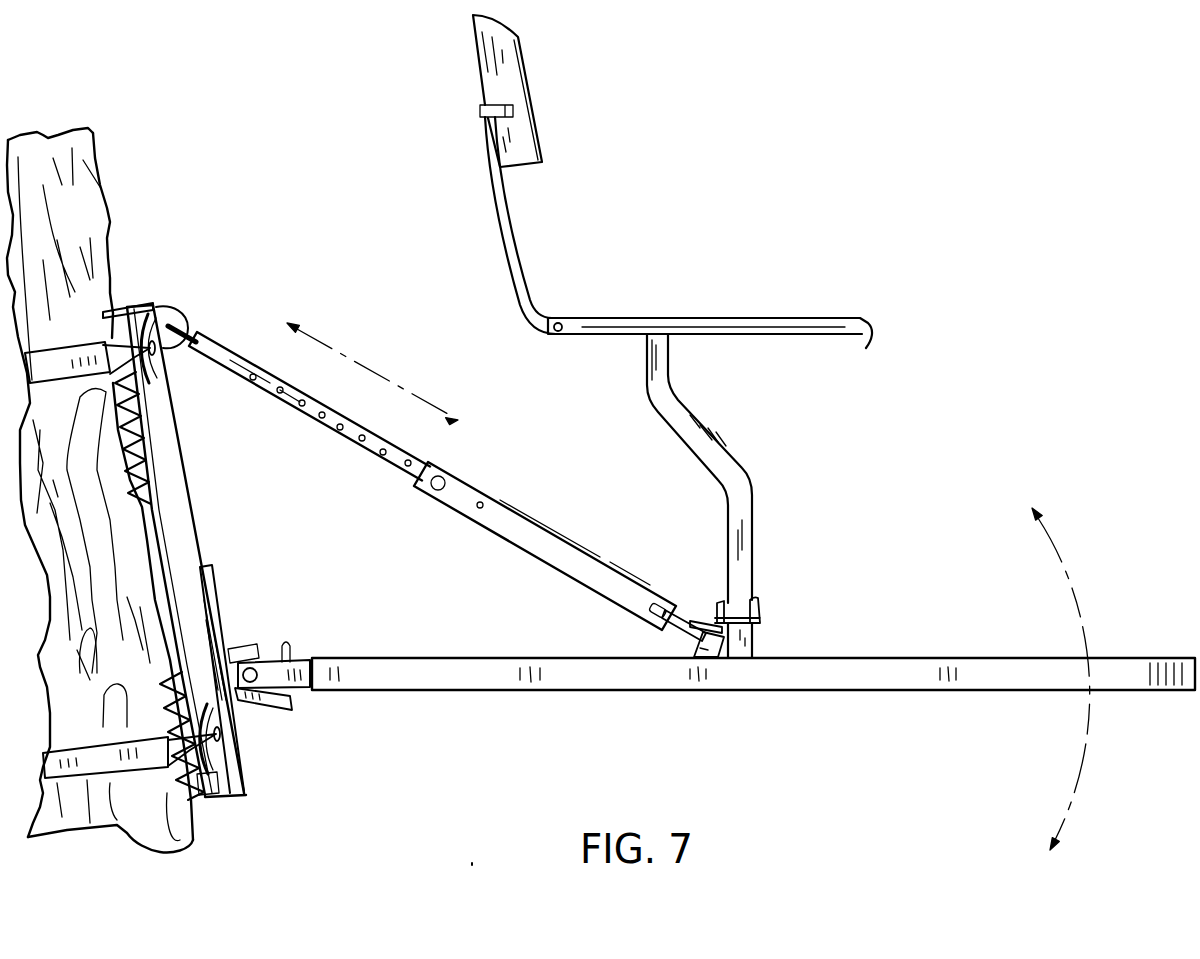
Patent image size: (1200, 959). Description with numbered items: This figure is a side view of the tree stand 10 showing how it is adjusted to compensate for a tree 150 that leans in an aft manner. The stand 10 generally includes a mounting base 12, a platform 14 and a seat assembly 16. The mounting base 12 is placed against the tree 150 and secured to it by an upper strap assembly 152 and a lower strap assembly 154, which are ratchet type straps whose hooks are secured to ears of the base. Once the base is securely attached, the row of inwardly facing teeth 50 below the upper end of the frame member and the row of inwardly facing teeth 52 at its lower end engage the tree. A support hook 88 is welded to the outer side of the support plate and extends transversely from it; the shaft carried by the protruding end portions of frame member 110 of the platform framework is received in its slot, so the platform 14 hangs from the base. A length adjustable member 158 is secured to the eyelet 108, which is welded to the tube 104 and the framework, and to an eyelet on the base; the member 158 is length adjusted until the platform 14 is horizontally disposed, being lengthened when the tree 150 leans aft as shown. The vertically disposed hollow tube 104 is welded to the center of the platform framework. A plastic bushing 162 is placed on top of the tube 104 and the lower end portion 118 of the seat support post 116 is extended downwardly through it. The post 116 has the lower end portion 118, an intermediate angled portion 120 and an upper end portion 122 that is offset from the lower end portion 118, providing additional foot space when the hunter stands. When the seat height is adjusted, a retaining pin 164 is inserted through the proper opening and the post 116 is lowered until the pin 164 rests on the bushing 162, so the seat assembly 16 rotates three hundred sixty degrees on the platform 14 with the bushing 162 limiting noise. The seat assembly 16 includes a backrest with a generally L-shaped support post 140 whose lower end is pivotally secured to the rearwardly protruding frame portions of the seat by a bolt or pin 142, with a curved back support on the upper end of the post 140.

The tree stand 10 is at (844, 488).
The mounting base 12 is at (207, 504).
The platform 14 is at (930, 646).
The seat assembly 16 is at (556, 254).
The row of inwardly facing teeth 50 is at (140, 413).
The row of inwardly facing teeth 52 is at (185, 760).
The support hook 88 is at (283, 700).
The hollow tube 104 is at (755, 638).
The eyelet 108 is at (695, 653).
The frame member 110 is at (287, 677).
The seat support post 116 is at (719, 432).
The lower end portion 118 is at (752, 540).
The intermediate angled portion 120 is at (712, 462).
The upper end portion 122 is at (655, 370).
The support post 140 is at (485, 204).
The bolt or pin 142 is at (560, 326).
The tree 150 is at (82, 202).
The upper strap assembly 152 is at (70, 348).
The lower strap assembly 154 is at (125, 765).
The length adjustable member 158 is at (511, 495).
The plastic bushing 162 is at (760, 620).
The retaining pin 164 is at (713, 617).